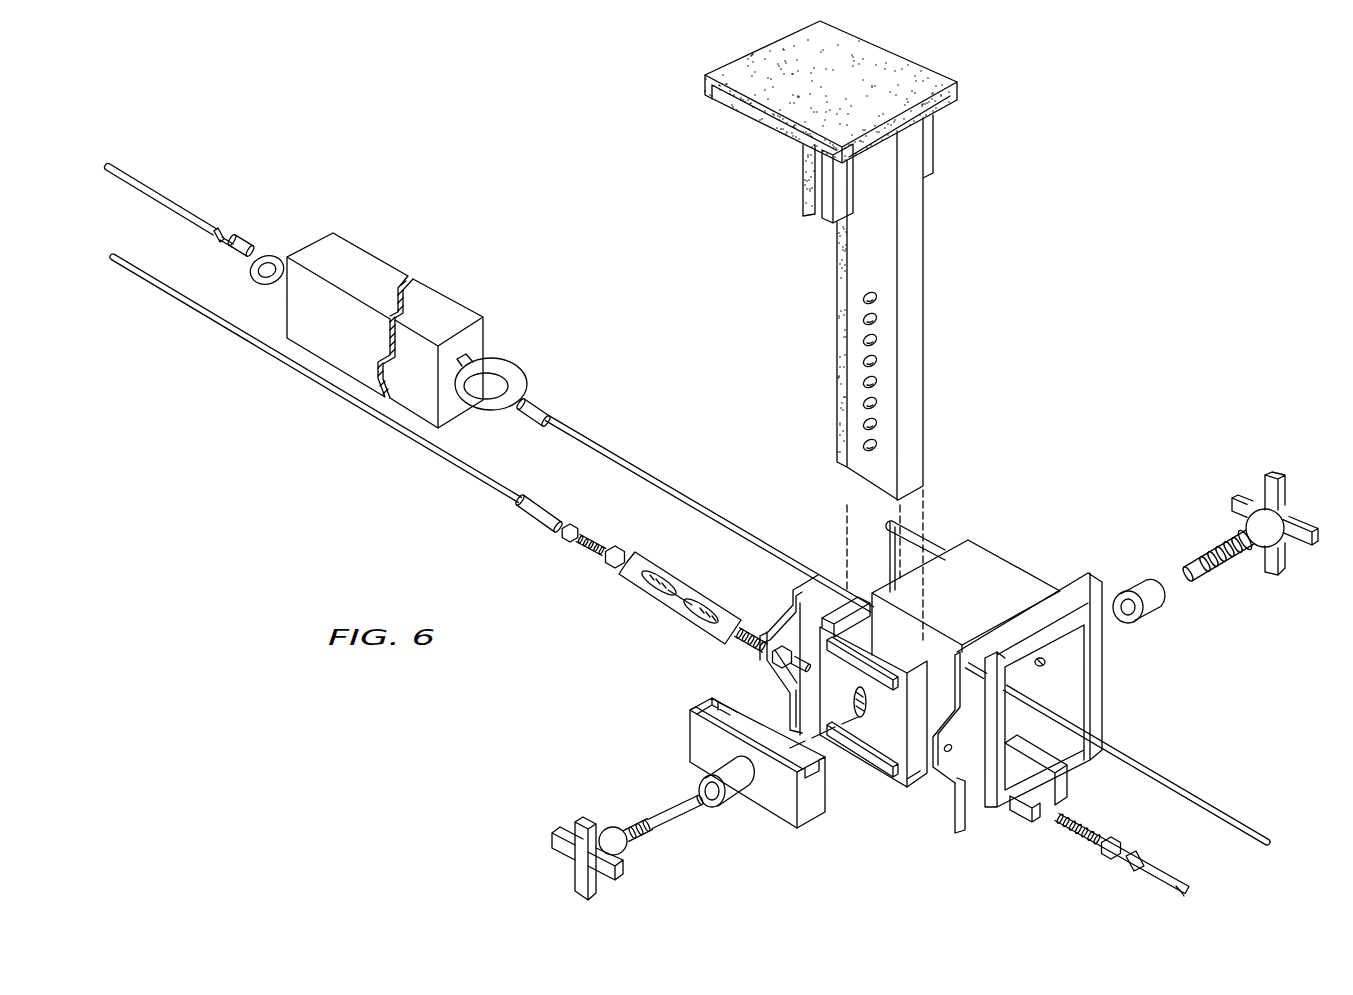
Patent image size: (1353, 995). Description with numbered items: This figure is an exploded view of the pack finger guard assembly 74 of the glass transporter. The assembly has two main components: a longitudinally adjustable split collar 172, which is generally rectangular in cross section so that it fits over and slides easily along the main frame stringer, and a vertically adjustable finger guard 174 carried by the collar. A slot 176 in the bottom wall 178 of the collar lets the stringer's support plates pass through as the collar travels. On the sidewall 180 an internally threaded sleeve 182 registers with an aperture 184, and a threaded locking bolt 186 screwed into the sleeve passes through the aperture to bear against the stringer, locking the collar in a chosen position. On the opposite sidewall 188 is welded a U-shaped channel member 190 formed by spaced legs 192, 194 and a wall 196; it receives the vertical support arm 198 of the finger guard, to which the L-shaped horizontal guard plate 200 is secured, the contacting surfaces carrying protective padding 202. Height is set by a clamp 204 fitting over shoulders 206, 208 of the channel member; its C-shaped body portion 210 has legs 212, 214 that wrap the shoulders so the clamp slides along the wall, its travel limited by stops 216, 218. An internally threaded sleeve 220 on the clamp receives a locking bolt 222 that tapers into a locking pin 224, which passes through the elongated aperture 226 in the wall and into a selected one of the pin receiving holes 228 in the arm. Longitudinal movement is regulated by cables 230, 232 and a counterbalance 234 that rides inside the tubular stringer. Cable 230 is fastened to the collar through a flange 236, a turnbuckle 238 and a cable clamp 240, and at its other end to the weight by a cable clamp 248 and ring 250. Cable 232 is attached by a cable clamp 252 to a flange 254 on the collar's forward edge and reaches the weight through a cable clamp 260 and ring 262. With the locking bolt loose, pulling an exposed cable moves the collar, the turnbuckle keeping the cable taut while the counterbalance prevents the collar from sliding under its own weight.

The finger guard assembly 74 is at (1075, 393).
The split collar 172 is at (1010, 560).
The finger guard 174 is at (930, 342).
The slot 176 is at (1042, 820).
The bottom wall 178 is at (1070, 770).
The sidewall 180 is at (1070, 706).
The internally threaded sleeve 182 is at (1134, 590).
The aperture 184 is at (1040, 667).
The locking bolt 186 is at (1268, 477).
The sidewall 188 is at (935, 652).
The channel member 190 is at (880, 787).
The leg 192 is at (856, 608).
The leg 194 is at (918, 655).
The wall 196 is at (858, 742).
The vertical support arm 198 is at (905, 239).
The guard plate 200 is at (945, 100).
The protective padding 202 is at (705, 86).
The clamp 204 is at (668, 783).
The shoulder 206 is at (826, 615).
The shoulder 208 is at (913, 778).
The body portion 210 is at (710, 752).
The leg 212 is at (706, 702).
The leg 214 is at (811, 802).
The stop 216 is at (840, 658).
The stop 218 is at (875, 753).
The internally threaded sleeve 220 is at (734, 792).
The locking bolt 222 is at (626, 826).
The locking pin 224 is at (676, 824).
The elongated aperture 226 is at (861, 700).
The pin receiving holes 228 is at (866, 427).
The cable 230 is at (160, 227).
The cable 232 is at (627, 462).
The counterbalance 234 is at (387, 274).
The flange 236 is at (782, 673).
The turnbuckle 238 is at (654, 596).
The cable clamp 240 is at (540, 515).
The cable clamp 248 is at (244, 240).
The ring 250 is at (259, 286).
The cable clamp 252 is at (1128, 863).
The flange 254 is at (973, 812).
The cable clamp 260 is at (542, 410).
The ring 262 is at (508, 368).